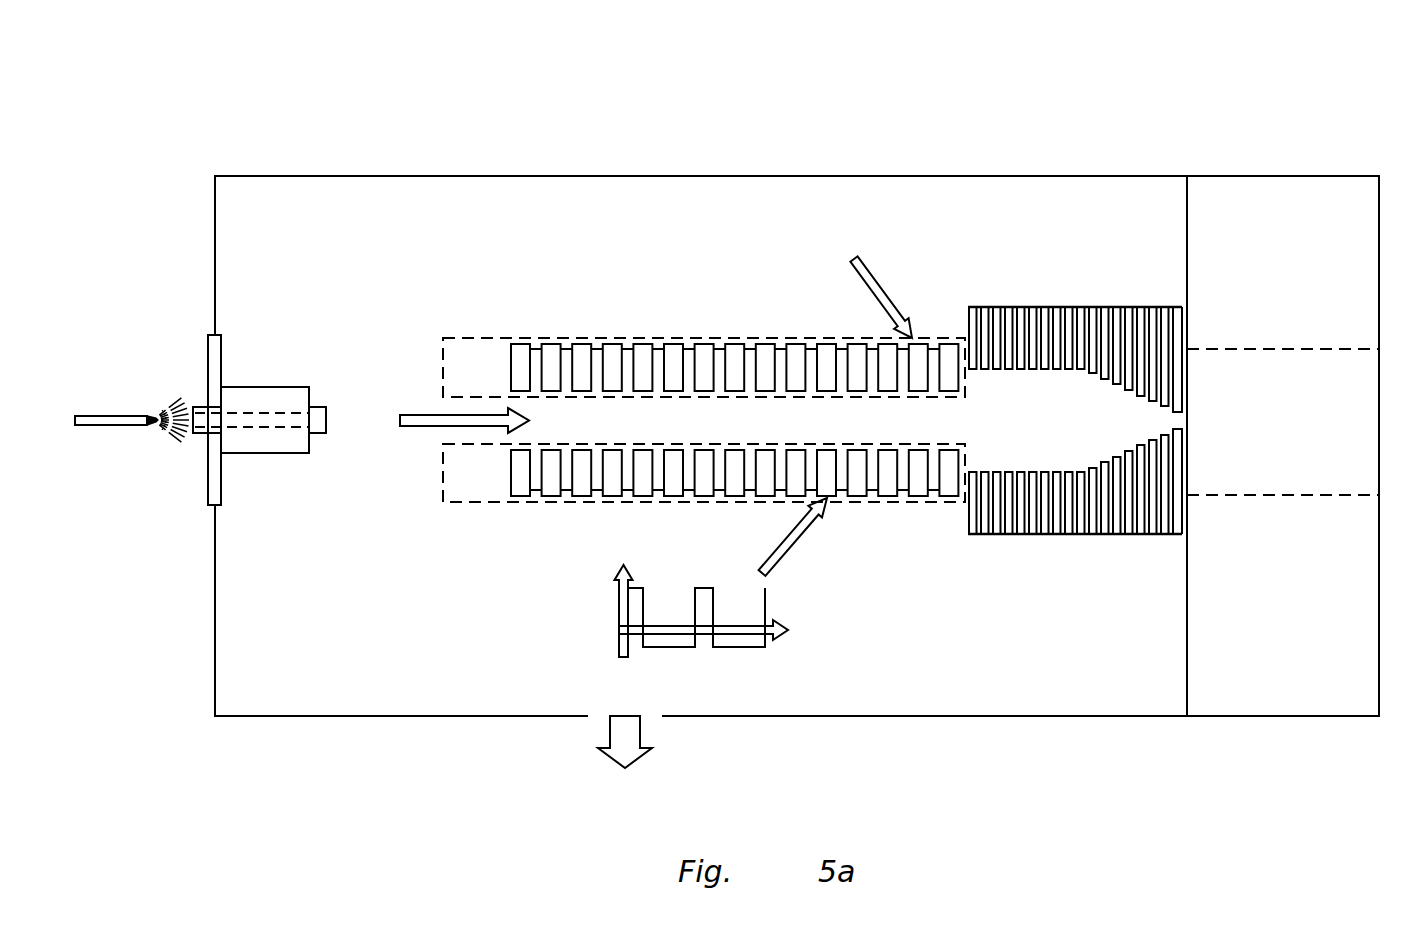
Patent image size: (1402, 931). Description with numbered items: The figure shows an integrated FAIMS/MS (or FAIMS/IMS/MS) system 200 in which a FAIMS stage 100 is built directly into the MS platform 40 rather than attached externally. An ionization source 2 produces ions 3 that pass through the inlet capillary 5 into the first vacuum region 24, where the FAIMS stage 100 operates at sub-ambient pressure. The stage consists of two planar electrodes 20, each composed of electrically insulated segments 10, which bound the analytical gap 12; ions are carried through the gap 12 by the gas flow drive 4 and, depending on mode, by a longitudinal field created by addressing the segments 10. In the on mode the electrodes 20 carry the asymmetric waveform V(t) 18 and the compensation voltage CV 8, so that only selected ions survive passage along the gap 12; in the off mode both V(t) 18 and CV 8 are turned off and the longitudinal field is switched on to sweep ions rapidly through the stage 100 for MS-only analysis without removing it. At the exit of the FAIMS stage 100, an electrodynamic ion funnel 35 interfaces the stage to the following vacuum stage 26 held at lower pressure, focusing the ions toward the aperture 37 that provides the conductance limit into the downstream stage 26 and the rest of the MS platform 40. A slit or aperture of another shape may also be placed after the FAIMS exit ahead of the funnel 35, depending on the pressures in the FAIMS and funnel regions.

The integrated FAIMS/MS system 200 is at (343, 97).
The first vacuum region 24 is at (278, 220).
The following vacuum stage 26 is at (1360, 220).
The ionization source 2 is at (127, 427).
The ions 3 is at (172, 405).
The inlet capillary 5 is at (270, 455).
The gas flow drive 4 is at (413, 413).
The planar electrodes 20 is at (678, 337).
The segments 10 is at (826, 350).
The compensation voltage (CV) 8 is at (852, 258).
The analytical gap 12 is at (912, 435).
The electrodynamic ion funnel 35 is at (1122, 435).
The aperture 37 is at (1187, 422).
The MS platform 40 is at (1305, 485).
The V(t) waveform 18 is at (703, 588).
The FAIMS stage 100 is at (498, 552).